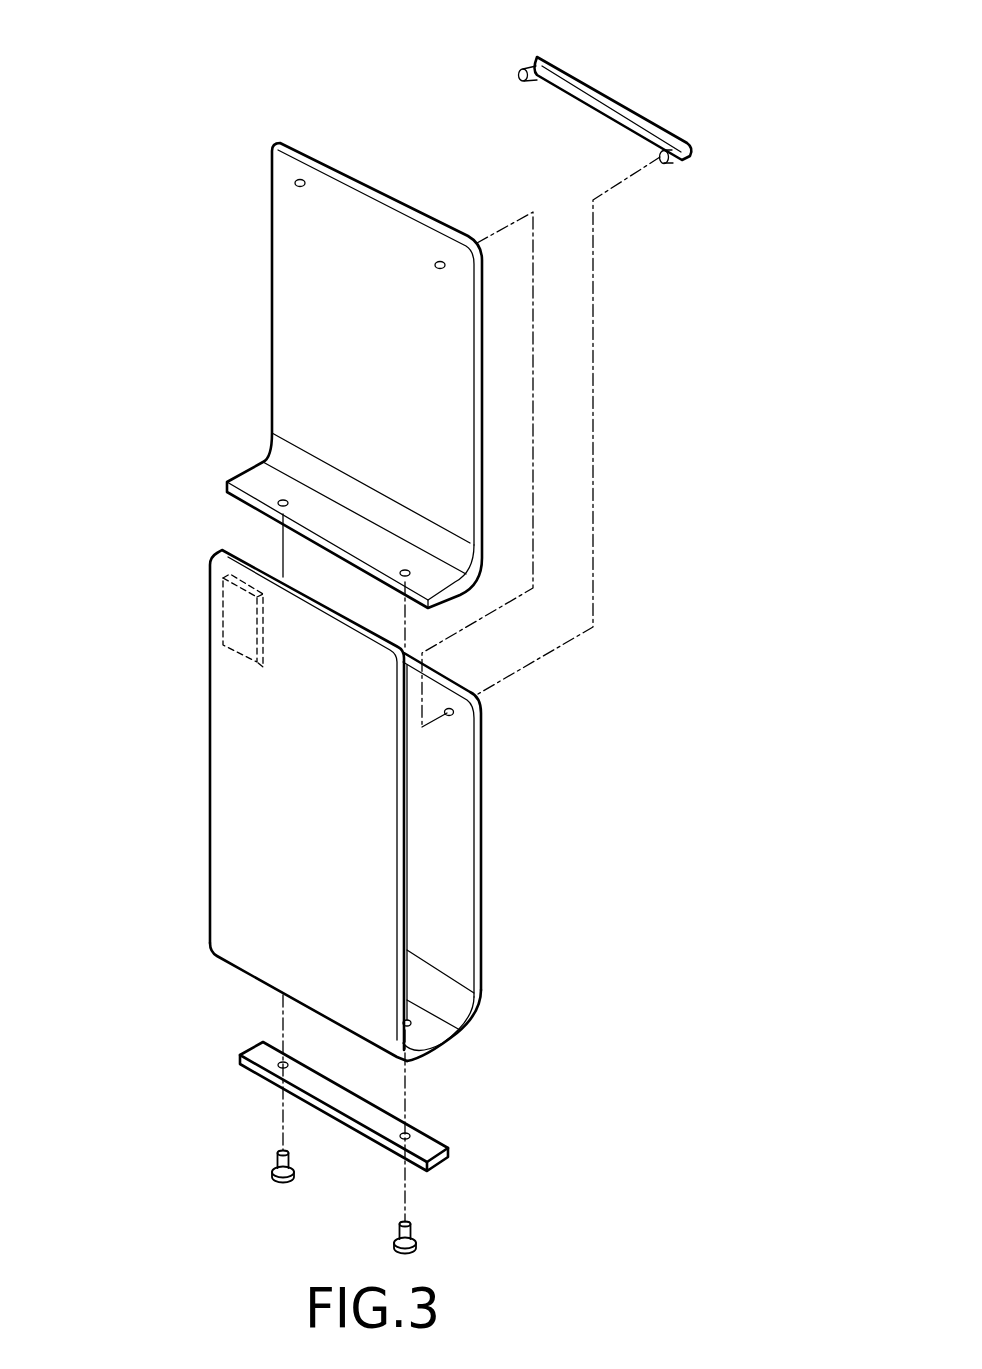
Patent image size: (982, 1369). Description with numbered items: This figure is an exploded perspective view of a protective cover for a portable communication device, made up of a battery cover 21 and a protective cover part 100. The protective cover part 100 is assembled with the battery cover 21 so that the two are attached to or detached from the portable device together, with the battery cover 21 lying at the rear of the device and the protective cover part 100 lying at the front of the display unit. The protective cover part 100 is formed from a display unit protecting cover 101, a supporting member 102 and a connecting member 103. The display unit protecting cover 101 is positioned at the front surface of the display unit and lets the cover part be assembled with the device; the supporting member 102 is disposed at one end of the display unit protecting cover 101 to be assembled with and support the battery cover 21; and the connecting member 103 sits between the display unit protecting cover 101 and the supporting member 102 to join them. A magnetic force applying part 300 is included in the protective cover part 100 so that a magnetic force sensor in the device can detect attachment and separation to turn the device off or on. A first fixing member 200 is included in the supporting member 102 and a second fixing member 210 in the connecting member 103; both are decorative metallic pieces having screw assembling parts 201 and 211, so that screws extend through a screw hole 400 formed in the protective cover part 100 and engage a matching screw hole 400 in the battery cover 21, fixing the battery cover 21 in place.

The battery cover 21 is at (283, 302).
The protective cover part 100 is at (385, 818).
The display unit protecting cover 101 is at (252, 805).
The supporting member 102 is at (482, 862).
The connecting member 103 is at (485, 1018).
The first fixing member 200 is at (601, 125).
The screw assembling part 201 is at (529, 65).
The second fixing member 210 is at (427, 1147).
The screw assembling part 211 is at (272, 1175).
The magnetic force applying part 300 is at (233, 615).
The screw hole 400 is at (303, 181).